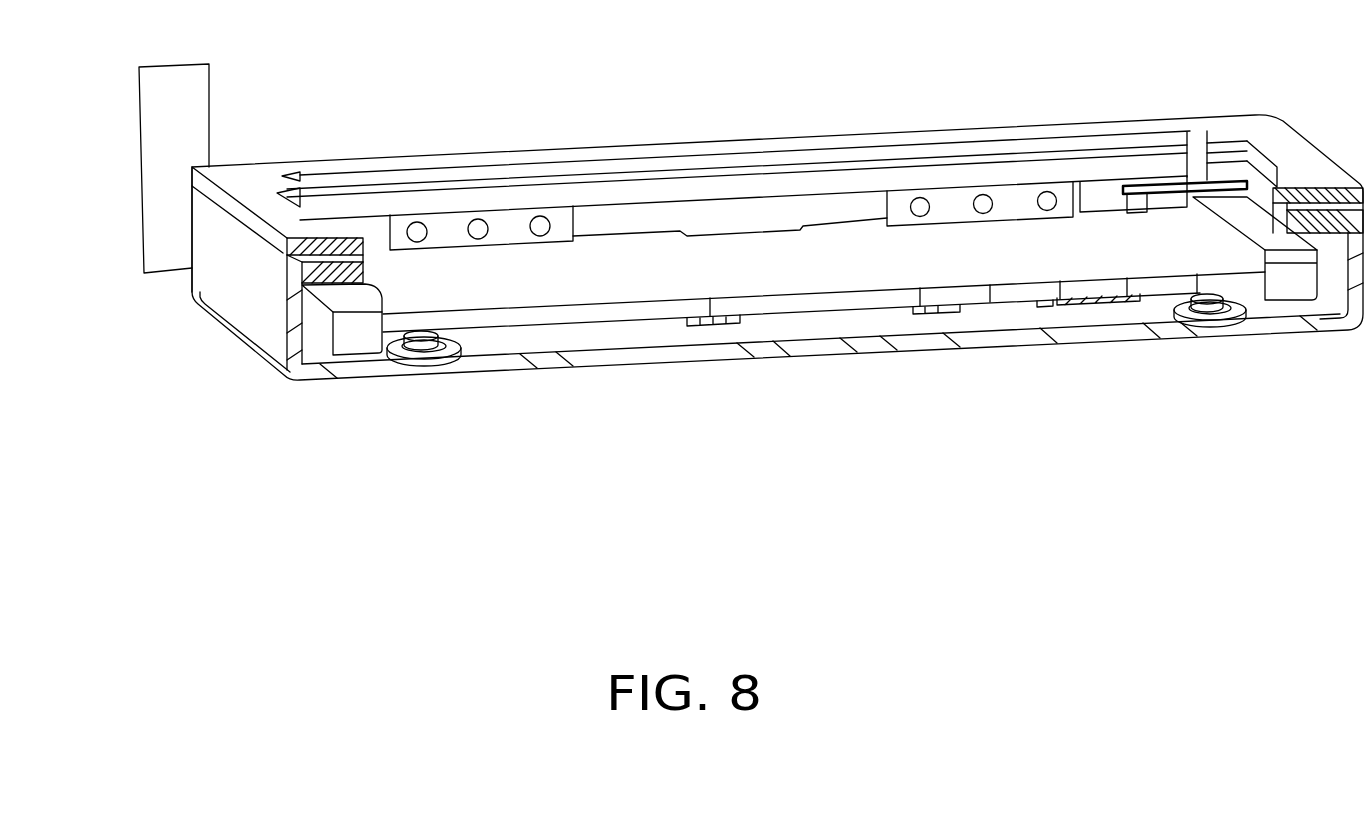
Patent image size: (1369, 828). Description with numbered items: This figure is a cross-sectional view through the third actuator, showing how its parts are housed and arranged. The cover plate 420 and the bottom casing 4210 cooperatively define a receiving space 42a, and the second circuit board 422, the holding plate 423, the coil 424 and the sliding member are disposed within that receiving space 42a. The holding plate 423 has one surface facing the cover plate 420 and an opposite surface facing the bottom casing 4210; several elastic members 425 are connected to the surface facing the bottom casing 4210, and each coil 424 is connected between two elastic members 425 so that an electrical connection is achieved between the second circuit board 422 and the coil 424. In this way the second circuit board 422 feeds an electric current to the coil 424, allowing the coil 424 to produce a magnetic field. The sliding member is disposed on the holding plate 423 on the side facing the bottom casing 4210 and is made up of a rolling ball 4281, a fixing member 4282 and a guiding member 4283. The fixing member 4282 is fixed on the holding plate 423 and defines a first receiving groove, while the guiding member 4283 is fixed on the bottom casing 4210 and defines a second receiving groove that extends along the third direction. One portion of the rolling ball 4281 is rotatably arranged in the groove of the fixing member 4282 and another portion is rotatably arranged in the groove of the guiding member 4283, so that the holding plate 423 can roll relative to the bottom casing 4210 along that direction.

The cover plate 420 is at (248, 183).
The bottom casing 4210 is at (222, 330).
The second circuit board 422 is at (163, 112).
The holding plate 423 is at (515, 273).
The elastic member 425 is at (962, 203).
The receiving space 42a is at (760, 211).
The coil 424 is at (363, 332).
The rolling ball 4281 is at (423, 342).
The fixing member 4282 is at (432, 345).
The guiding member 4283 is at (393, 357).